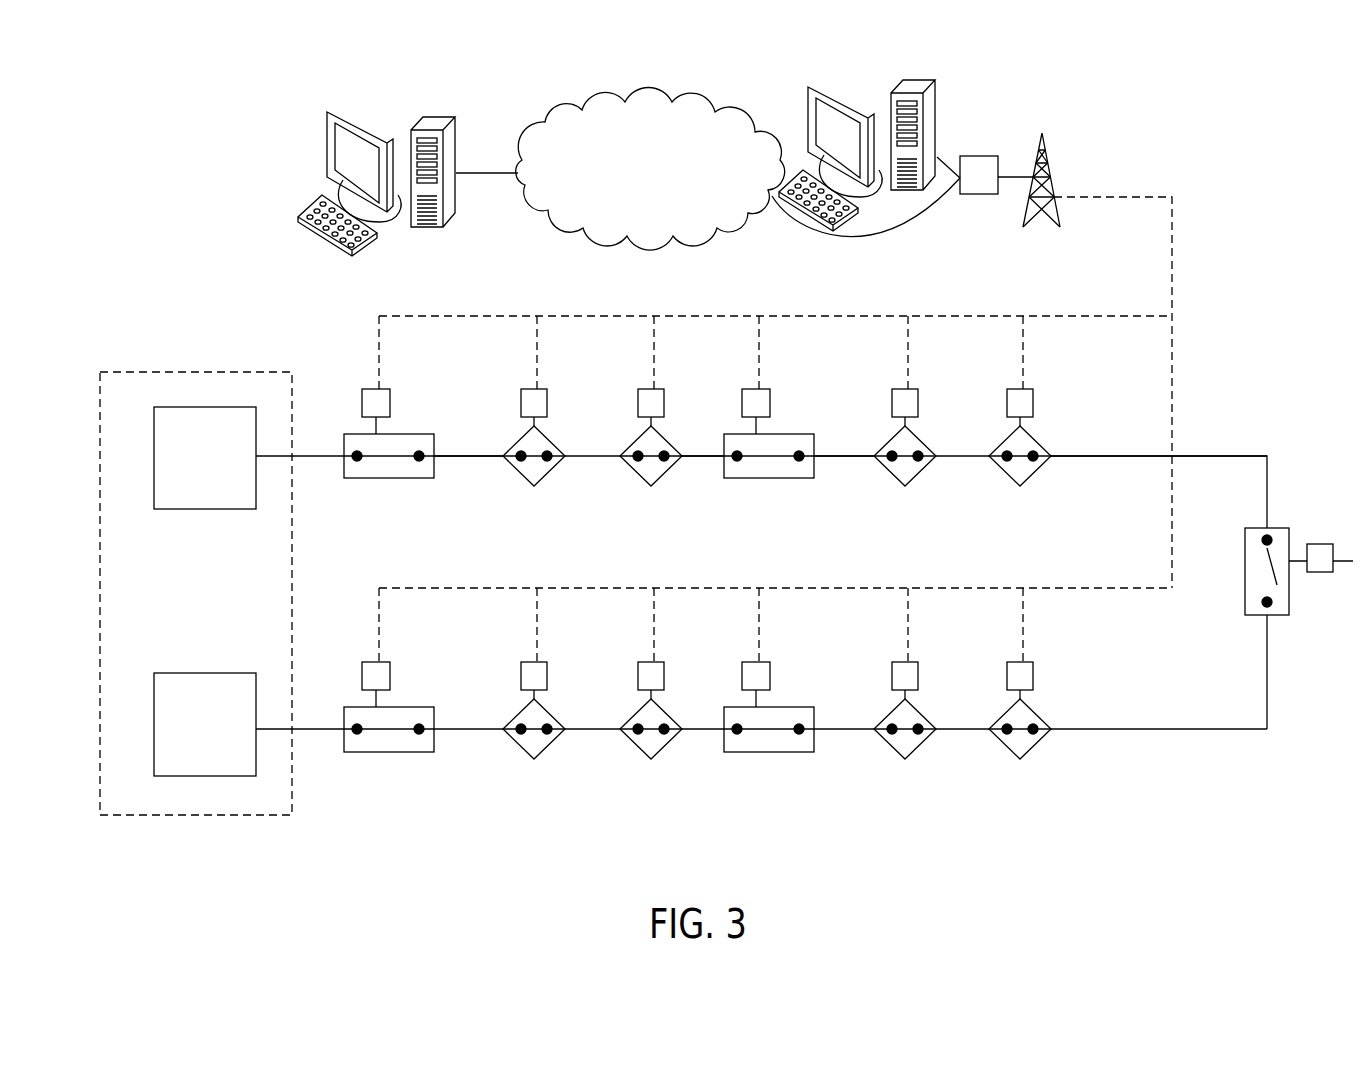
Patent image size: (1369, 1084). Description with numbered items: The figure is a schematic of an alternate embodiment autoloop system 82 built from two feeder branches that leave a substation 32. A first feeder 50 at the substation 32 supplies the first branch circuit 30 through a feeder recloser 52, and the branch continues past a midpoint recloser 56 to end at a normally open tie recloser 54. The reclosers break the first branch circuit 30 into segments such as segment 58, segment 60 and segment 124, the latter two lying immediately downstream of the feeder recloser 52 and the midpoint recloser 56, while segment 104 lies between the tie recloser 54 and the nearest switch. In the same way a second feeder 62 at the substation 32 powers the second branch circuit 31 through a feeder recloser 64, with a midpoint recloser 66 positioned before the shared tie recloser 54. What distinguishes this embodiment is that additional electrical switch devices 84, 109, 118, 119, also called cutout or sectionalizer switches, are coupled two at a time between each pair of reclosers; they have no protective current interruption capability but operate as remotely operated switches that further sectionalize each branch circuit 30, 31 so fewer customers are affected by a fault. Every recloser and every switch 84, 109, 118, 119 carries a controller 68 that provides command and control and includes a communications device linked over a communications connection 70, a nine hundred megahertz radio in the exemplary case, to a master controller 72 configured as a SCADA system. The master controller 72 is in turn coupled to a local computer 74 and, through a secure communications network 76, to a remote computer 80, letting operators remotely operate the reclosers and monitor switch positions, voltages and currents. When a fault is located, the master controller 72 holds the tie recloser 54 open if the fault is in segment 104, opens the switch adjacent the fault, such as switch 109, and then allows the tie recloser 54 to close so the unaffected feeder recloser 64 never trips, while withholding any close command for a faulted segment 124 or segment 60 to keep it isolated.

The first branch circuit 30 is at (308, 327).
The second branch circuit 31 is at (436, 807).
The substation 32 is at (99, 547).
The first feeder 50 is at (201, 407).
The feeder recloser 52 is at (418, 434).
The tie recloser 54 is at (1290, 600).
The midpoint recloser 56 is at (797, 434).
The segment 58 is at (702, 462).
The segment 60 is at (842, 456).
The feeder 62 is at (178, 777).
The feeder recloser 64 is at (418, 707).
The midpoint recloser 66 is at (797, 707).
The controller 68 is at (367, 389).
The communications connection 70 is at (1170, 272).
The master controller 72 is at (980, 156).
The local computer 74 is at (808, 122).
The communications network 76 is at (572, 244).
The remote computer 80 is at (328, 146).
The autoloop system 82 is at (1266, 314).
The electrical switch device 84 is at (893, 478).
The segment 104 is at (1222, 456).
The switch 109 is at (1008, 478).
The switch 118 is at (671, 438).
The switch 119 is at (525, 478).
The segment 124 is at (487, 456).